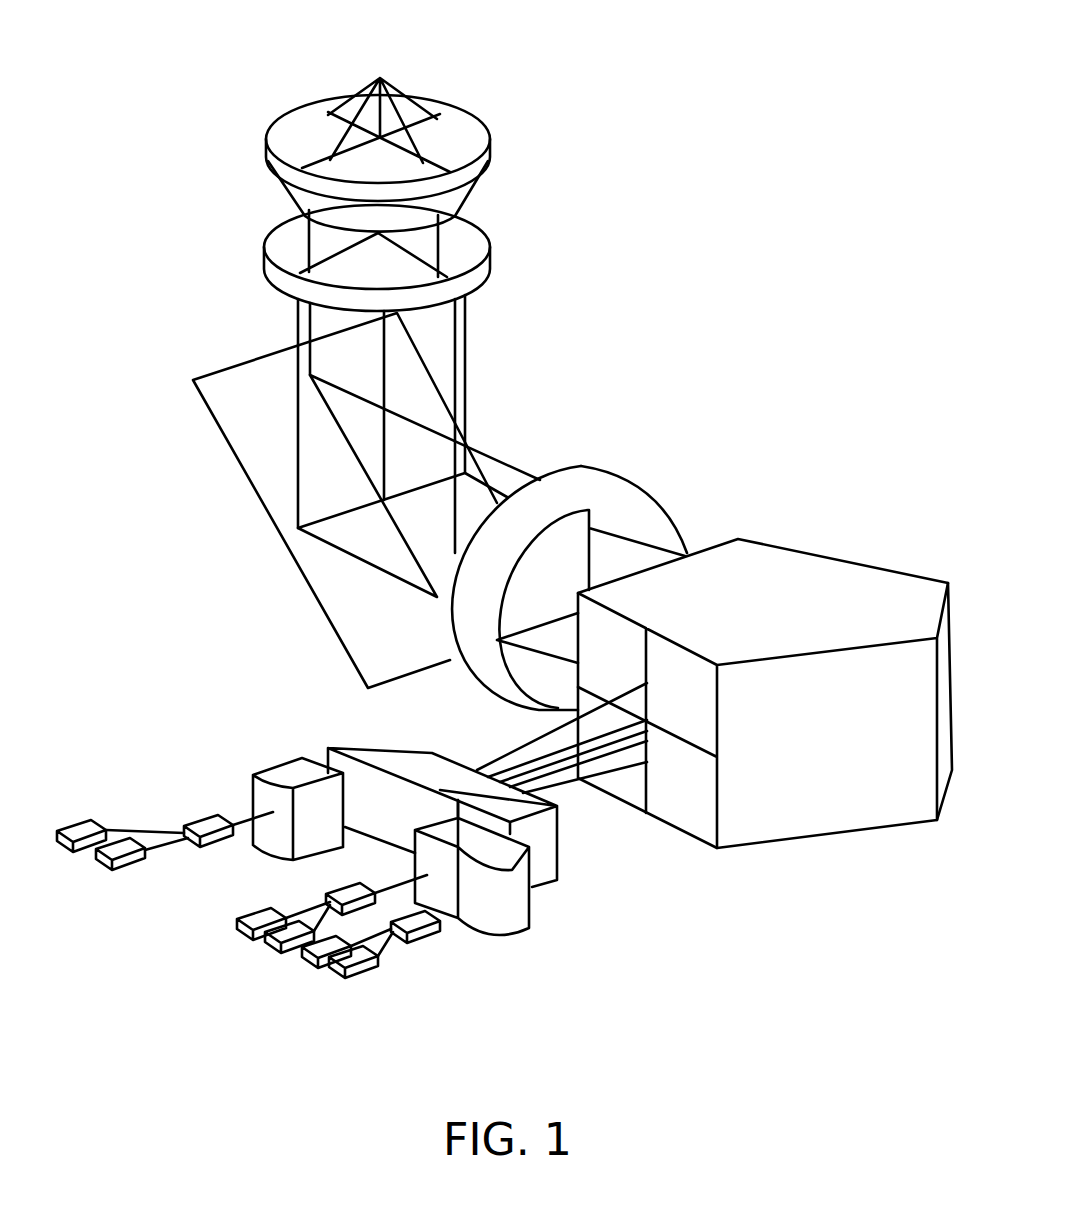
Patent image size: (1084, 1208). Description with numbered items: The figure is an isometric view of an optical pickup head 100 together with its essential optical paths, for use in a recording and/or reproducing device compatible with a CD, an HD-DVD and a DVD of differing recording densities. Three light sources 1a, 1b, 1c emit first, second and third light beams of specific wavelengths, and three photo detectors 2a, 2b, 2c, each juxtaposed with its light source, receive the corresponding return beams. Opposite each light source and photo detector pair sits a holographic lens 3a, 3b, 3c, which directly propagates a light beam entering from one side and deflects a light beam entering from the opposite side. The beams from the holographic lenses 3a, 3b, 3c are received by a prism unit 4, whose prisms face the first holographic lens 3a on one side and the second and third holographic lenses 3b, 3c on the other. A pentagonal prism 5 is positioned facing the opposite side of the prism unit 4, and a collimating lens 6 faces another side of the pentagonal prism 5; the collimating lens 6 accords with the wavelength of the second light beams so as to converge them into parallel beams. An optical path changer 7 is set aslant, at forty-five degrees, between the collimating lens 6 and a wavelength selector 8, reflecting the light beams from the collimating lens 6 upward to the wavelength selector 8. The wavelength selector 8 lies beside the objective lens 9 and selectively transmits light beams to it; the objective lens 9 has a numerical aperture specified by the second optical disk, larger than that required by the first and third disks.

The optical pickup head 100 is at (692, 38).
The first light source 1a is at (120, 845).
The second light source 1b is at (257, 913).
The third light source 1c is at (322, 962).
The first photo detector 2a is at (77, 827).
The second photo detector 2b is at (278, 945).
The third photo detector 2c is at (362, 960).
The first holographic lens 3a is at (207, 820).
The second holographic lens 3b is at (347, 887).
The third holographic lens 3c is at (427, 935).
The prism unit 4 is at (528, 882).
The pentagonal prism 5 is at (778, 572).
The collimating lens 6 is at (577, 490).
The optical path changer 7 is at (332, 586).
The wavelength selector 8 is at (458, 232).
The objective lens 9 is at (450, 135).